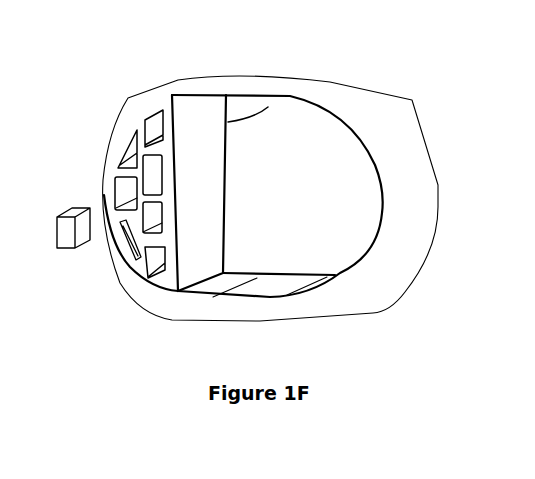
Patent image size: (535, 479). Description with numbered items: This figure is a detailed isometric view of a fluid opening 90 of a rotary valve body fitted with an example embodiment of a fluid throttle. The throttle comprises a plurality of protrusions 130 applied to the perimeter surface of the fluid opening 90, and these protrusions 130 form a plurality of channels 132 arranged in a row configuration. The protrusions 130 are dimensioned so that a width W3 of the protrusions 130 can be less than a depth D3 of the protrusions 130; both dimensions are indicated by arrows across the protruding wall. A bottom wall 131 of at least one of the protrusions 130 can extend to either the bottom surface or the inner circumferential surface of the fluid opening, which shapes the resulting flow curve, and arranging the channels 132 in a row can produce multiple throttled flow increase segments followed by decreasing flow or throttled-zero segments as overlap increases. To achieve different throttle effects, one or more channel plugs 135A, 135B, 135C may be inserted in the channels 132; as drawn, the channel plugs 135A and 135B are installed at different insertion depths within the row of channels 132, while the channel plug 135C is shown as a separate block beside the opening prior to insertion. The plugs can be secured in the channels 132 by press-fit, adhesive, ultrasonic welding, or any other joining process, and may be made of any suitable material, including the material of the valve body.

The fluid opening 90 is at (272, 297).
The protrusions 130 is at (175, 120).
The bottom wall 131 is at (268, 107).
The channels 132 is at (153, 120).
The channel plug 135A is at (153, 170).
The channel plug 135B is at (133, 234).
The channel plug 135C is at (79, 208).
The width of the protrusions W3 is at (138, 186).
The depth of the protrusions D3 is at (223, 242).